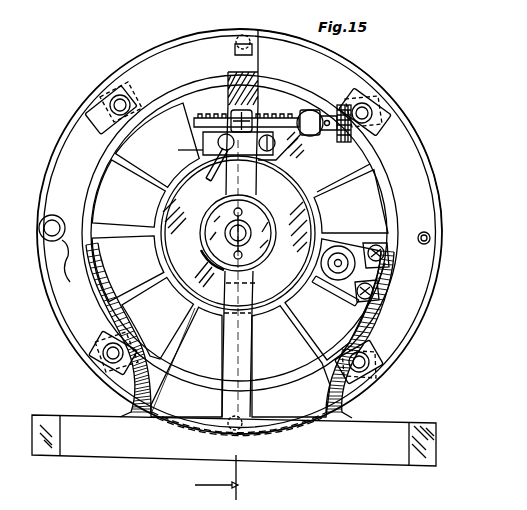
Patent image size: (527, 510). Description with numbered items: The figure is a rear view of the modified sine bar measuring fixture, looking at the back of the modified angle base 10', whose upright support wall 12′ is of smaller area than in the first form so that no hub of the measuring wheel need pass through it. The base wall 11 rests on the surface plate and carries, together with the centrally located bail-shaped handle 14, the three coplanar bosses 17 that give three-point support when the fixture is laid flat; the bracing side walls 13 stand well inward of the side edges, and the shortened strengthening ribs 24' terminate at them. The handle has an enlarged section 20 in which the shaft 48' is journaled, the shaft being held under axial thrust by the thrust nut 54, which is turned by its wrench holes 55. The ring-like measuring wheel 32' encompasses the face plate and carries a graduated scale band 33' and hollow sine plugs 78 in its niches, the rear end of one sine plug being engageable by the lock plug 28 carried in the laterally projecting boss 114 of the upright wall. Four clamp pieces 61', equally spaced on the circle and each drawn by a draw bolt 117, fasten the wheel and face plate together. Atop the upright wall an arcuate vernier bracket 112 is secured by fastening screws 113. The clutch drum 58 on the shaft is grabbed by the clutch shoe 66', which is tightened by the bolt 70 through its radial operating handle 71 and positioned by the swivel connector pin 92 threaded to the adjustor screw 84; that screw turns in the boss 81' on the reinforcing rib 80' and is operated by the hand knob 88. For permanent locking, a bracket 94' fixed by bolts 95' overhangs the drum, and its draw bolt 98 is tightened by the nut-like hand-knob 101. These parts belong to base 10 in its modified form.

The angle base 10 is at (17, 470).
The modified angle base 10' is at (387, 483).
The base wall 11 is at (234, 440).
The modified upright support wall 12′ is at (269, 96).
The bracing side walls 13 is at (121, 331).
The bail-shaped handle 14 is at (258, 76).
The bosses 17 is at (2, 100).
The enlarged section of handle 20 is at (213, 250).
The strengthening ribs 24' is at (252, 293).
The lock plug 28 is at (40, 226).
The modified measuring wheel 32' is at (264, 233).
The graduated scale band 33' is at (342, 130).
The shaft 48' is at (247, 235).
The thrust nut 54 is at (250, 271).
The wrench holes 55 is at (227, 268).
The clutch drum 58 is at (163, 241).
The clamp pieces 61' is at (235, 216).
The clutch shoe 66' is at (171, 150).
The tightening and loosening bolt 70 is at (218, 140).
The radial operating handle 71 is at (208, 179).
The sine plugs 78 is at (430, 236).
The reinforcing rib 80' is at (307, 151).
The boss 81' is at (319, 103).
The adjustor screw 84 is at (246, 113).
The operating hand knob 88 is at (344, 144).
The swivel connector pin 92 is at (231, 113).
The bracket 94' is at (389, 272).
The bolts 95' is at (391, 262).
The draw bolt 98 is at (332, 277).
The hand-knob 101 is at (338, 265).
The vernier bracket 112 is at (151, 57).
The fastening screws 113 is at (235, 48).
The laterally projecting boss 114 is at (68, 282).
The draw bolt 117 is at (124, 111).